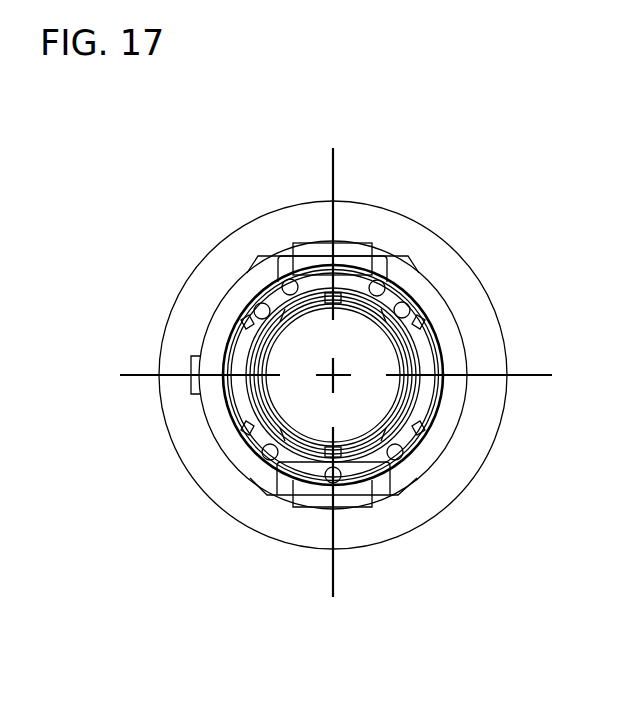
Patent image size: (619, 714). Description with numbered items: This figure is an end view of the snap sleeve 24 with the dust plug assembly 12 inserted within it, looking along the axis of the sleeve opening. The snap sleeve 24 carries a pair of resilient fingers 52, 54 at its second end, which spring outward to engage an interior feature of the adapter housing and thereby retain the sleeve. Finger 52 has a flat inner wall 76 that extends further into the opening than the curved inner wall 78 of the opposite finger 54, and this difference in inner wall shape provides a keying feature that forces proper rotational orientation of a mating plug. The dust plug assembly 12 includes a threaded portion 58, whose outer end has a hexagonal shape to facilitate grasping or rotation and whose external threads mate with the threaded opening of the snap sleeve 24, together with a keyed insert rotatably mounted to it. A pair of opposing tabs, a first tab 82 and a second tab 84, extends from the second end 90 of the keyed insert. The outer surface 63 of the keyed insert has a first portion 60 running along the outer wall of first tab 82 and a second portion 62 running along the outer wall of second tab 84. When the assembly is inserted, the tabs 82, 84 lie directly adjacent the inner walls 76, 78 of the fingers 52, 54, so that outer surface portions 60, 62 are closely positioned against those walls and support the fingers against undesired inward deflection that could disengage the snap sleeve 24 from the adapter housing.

The snap sleeve 24 is at (180, 283).
The dust plug assembly 12 is at (324, 331).
The finger 52 is at (312, 250).
The finger 54 is at (311, 500).
The inner wall 76 is at (353, 275).
The first portion 60 is at (368, 277).
The first tab 82 is at (398, 285).
The threaded portion 58 is at (431, 345).
The second end 90 is at (423, 393).
The outer surface 63 is at (417, 443).
The second tab 84 is at (358, 475).
The second portion 62 is at (334, 562).
The inner wall 78 is at (347, 485).